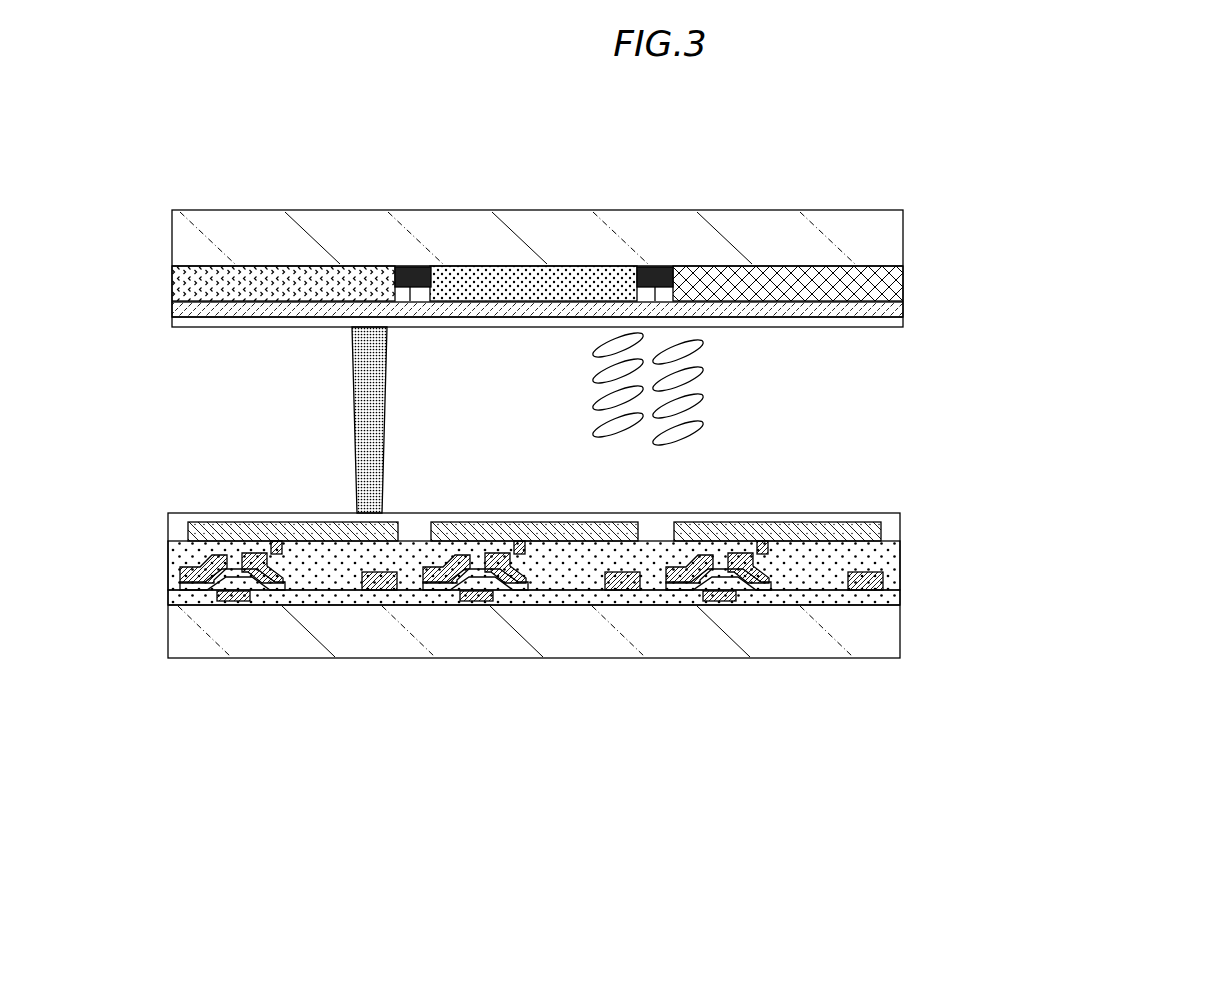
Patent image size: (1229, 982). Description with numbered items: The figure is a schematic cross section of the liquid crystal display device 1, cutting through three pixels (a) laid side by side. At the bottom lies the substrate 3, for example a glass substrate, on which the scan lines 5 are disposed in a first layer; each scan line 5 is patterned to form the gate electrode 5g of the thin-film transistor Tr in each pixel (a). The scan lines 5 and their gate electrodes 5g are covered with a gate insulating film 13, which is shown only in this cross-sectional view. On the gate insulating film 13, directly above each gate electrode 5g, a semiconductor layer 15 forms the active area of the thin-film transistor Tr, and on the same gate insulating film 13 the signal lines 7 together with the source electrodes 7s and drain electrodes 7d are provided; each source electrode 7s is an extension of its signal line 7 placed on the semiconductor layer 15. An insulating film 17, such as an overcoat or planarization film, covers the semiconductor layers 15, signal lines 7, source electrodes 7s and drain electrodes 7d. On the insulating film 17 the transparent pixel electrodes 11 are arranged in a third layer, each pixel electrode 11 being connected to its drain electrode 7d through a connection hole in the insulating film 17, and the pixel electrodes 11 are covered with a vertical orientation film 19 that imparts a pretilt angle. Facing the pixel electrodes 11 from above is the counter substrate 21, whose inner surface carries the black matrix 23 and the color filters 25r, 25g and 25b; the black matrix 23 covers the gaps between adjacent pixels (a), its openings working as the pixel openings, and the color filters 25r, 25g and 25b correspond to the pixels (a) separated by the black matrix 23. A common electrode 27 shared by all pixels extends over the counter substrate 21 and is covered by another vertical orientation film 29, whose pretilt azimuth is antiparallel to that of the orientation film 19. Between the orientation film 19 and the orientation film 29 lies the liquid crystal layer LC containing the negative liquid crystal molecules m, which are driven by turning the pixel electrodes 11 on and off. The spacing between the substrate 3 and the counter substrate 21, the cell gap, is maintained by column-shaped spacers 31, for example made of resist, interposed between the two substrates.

The liquid crystal display device 1 is at (247, 136).
The substrate 3 is at (903, 653).
The scan line 5 is at (490, 649).
The gate electrode 5g is at (237, 603).
The signal line 7 is at (525, 580).
The source electrode 7s is at (186, 565).
The drain electrode 7d is at (298, 556).
The pixel electrode 11 is at (276, 541).
The gate insulating film 13 is at (903, 597).
The semiconductor layer 15 is at (272, 592).
The insulating film 17 is at (903, 565).
The orientation film 19 is at (238, 513).
The counter substrate 21 is at (850, 212).
The black matrix 23 is at (410, 267).
The red color filter 25r is at (216, 266).
The green color filter 25g is at (540, 266).
The blue color filter 25b is at (768, 266).
The common electrode 27 is at (905, 311).
The orientation film 29 is at (235, 328).
The column-shaped spacer 31 is at (388, 383).
The thin-film transistor Tr is at (216, 640).
The pixel a is at (193, 762).
The liquid crystal molecule m is at (700, 371).
The liquid crystal layer LC is at (830, 399).